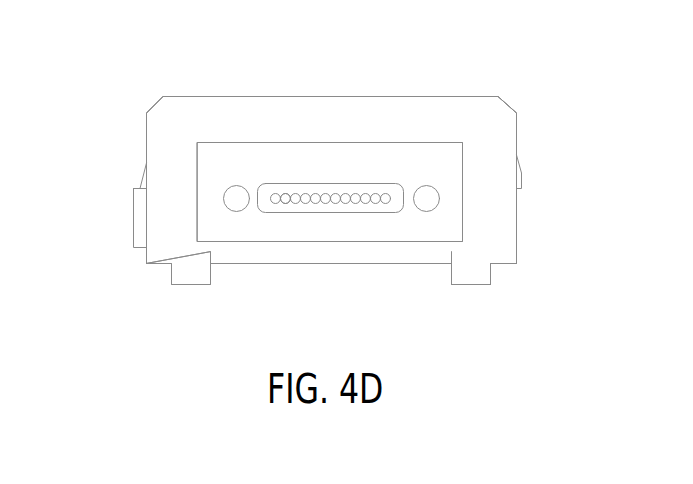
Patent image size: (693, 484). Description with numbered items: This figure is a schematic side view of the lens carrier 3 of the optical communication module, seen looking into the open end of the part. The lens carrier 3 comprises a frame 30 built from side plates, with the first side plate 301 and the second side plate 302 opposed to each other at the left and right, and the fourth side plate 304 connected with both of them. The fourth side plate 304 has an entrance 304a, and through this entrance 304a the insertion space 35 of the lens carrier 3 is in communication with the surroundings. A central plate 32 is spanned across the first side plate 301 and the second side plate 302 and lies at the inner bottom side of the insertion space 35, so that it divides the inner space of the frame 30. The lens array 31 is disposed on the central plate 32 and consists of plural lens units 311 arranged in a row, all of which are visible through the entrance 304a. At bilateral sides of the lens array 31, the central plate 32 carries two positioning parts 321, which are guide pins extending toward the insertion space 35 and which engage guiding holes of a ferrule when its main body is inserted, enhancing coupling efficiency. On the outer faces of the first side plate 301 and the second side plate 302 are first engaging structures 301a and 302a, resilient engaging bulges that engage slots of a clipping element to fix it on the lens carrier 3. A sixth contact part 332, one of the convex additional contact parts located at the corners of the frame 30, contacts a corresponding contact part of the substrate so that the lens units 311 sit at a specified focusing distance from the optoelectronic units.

The lens carrier 3 is at (476, 44).
The frame 30 is at (326, 82).
The first side plate 301 is at (152, 106).
The first engaging structure 301a is at (143, 162).
The second side plate 302 is at (507, 215).
The first engaging structure 302a is at (522, 175).
The fourth side plate 304 is at (489, 119).
The entrance 304a is at (457, 243).
The sixth contact part 332 is at (502, 258).
The central plate 32 is at (362, 165).
The insertion space 35 is at (218, 162).
The lens array 31 is at (331, 216).
The lens unit 311 is at (286, 203).
The positioning part 321 is at (236, 205).